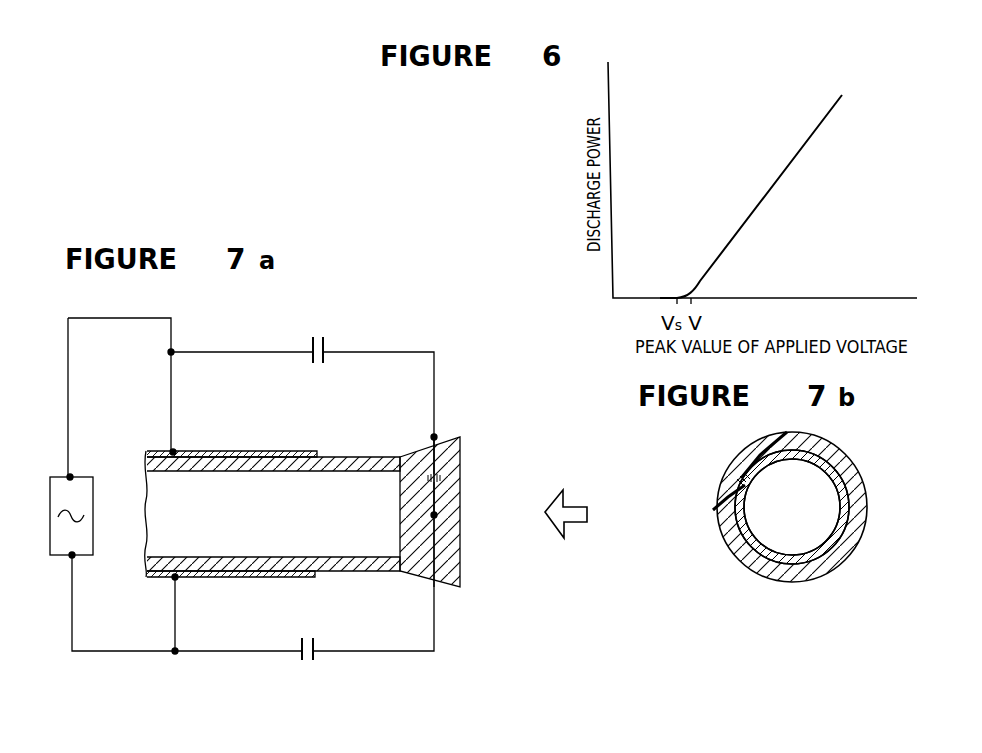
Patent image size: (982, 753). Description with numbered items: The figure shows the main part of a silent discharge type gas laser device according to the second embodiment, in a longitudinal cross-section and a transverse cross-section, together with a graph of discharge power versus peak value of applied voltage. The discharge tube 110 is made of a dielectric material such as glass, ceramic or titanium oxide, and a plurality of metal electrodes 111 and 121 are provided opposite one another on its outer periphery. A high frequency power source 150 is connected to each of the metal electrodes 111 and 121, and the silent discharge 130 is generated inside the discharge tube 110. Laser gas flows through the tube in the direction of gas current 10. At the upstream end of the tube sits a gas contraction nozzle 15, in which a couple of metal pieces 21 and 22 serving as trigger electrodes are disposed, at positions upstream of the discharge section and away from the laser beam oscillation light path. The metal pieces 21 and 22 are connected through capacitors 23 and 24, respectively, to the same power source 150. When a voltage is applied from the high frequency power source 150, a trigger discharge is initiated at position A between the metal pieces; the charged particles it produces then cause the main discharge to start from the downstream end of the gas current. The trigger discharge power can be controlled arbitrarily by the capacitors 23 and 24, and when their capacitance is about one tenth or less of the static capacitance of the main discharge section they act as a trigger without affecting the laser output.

In FIG. 7B, the direction of gas current 10 is at (575, 506).
In FIG. 7A, the gas contraction nozzle 15 is at (427, 580).
In FIG. 7B, the gas contraction nozzle 15 is at (850, 540).
In FIG. 7A, the metal piece 21 is at (462, 447).
In FIG. 7B, the metal piece 21 is at (785, 435).
In FIG. 7A, the metal piece 22 is at (434, 515).
In FIG. 7B, the metal piece 22 is at (725, 500).
In FIG. 7A, the capacitor 23 is at (325, 338).
In FIG. 7A, the capacitor 24 is at (308, 662).
In FIG. 7A, the discharge tube 110 is at (355, 571).
In FIG. 7B, the discharge tube 110 is at (840, 468).
In FIG. 7A, the metal electrode 111 is at (238, 577).
In FIG. 7A, the metal electrode 121 is at (287, 451).
In FIG. 7A, the silent discharge 130 is at (225, 518).
In FIG. 7B, the silent discharge 130 is at (787, 540).
In FIG. 7A, the high frequency power source 150 is at (83, 476).
In FIG. 7A, the trigger discharge position A is at (442, 477).
In FIG. 7B, the trigger discharge position A is at (737, 470).